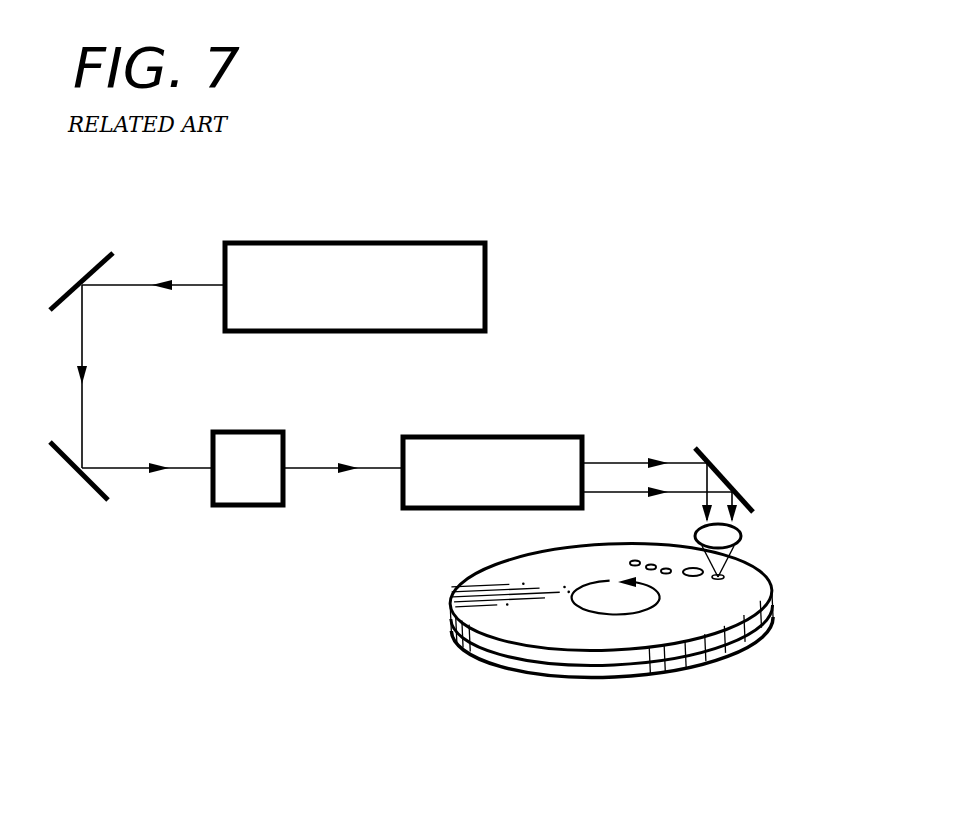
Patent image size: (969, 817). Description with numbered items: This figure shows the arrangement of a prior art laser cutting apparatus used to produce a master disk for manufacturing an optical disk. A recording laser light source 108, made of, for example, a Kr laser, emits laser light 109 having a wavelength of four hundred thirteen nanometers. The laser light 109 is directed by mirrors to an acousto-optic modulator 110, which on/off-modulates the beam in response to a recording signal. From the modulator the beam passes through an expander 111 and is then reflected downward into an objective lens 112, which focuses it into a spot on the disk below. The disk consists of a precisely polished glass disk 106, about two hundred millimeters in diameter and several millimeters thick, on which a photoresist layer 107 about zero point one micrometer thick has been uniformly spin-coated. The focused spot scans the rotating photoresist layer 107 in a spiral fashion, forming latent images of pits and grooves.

The glass disk 106 is at (753, 652).
The photoresist layer 107 is at (750, 607).
The recording laser light source 108 is at (364, 243).
The laser light 109 is at (183, 278).
The acousto-optic modulator 110 is at (252, 432).
The expander 111 is at (488, 437).
The objective lens 112 is at (742, 538).